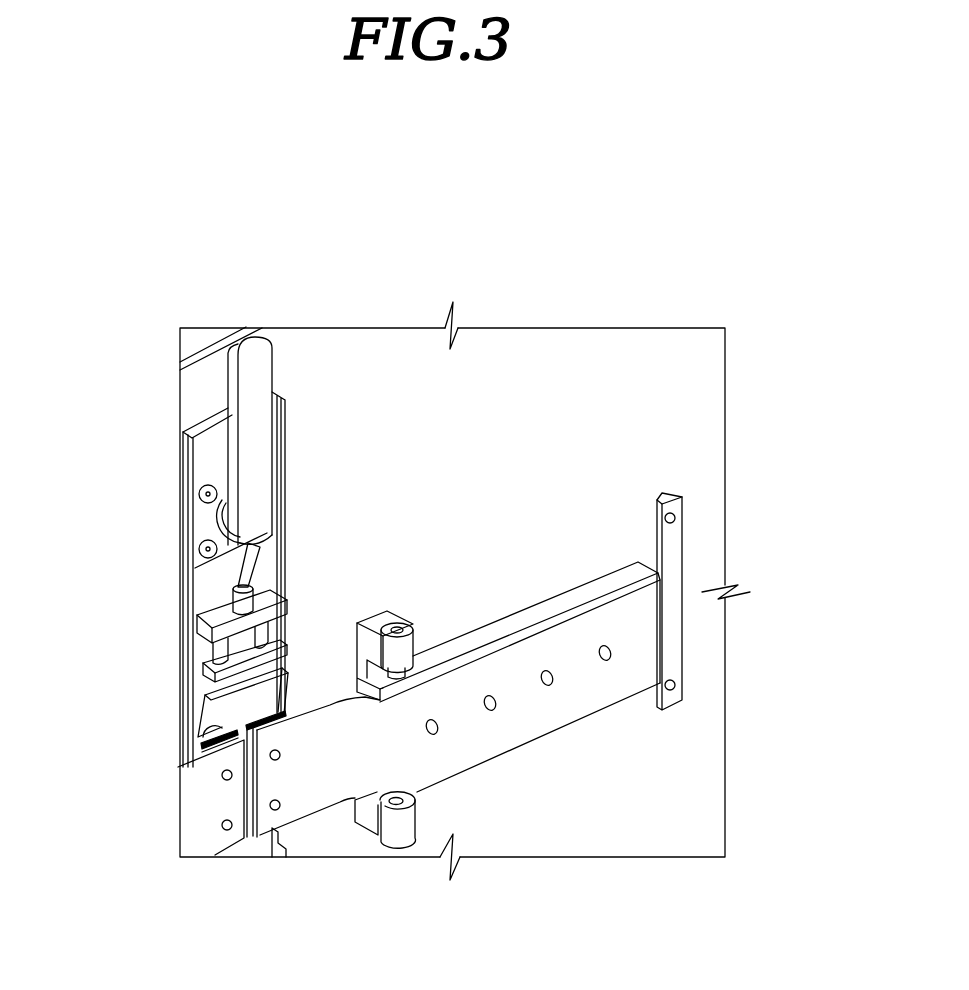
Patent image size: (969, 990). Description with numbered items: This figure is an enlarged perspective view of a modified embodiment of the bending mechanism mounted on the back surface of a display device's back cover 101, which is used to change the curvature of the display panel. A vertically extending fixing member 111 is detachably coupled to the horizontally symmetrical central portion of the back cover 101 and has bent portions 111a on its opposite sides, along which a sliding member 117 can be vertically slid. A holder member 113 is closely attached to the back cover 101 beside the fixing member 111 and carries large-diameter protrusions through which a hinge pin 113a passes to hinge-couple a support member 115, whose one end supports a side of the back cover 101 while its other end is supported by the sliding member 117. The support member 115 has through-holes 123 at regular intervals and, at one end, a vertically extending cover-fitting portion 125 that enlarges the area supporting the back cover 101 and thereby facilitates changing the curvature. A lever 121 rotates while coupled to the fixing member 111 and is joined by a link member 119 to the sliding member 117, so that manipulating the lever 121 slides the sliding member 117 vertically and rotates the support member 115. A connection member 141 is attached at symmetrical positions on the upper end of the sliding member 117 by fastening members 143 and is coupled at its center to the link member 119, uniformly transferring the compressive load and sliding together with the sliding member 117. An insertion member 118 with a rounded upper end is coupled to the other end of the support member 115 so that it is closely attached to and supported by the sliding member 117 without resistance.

The back cover 101 is at (660, 787).
The fixing member 111 is at (204, 578).
The bent portions 111a is at (183, 453).
The holder member 113 is at (377, 613).
The hinge pin 113a is at (397, 627).
The support member 115 is at (480, 740).
The sliding member 117 is at (217, 707).
The insertion member 118 is at (200, 729).
The link member 119 is at (207, 543).
The lever 121 is at (260, 377).
The through-holes 123 is at (495, 706).
The cover-fitting portion 125 is at (673, 647).
The connection member 141 is at (206, 639).
The fastening members 143 is at (213, 663).